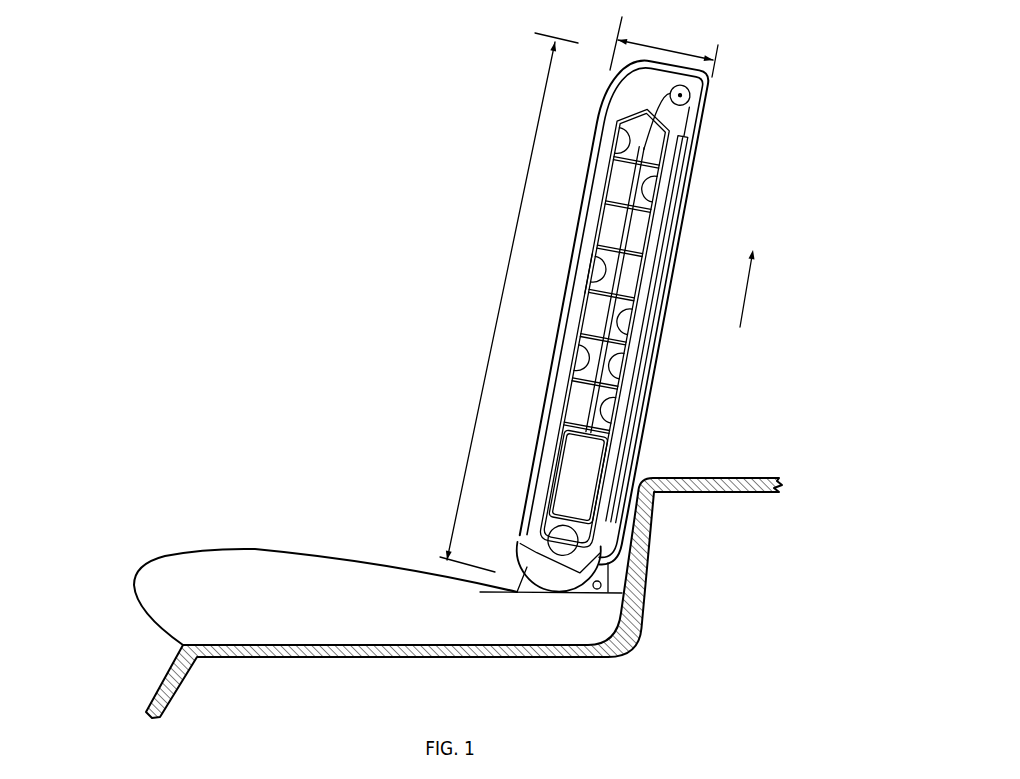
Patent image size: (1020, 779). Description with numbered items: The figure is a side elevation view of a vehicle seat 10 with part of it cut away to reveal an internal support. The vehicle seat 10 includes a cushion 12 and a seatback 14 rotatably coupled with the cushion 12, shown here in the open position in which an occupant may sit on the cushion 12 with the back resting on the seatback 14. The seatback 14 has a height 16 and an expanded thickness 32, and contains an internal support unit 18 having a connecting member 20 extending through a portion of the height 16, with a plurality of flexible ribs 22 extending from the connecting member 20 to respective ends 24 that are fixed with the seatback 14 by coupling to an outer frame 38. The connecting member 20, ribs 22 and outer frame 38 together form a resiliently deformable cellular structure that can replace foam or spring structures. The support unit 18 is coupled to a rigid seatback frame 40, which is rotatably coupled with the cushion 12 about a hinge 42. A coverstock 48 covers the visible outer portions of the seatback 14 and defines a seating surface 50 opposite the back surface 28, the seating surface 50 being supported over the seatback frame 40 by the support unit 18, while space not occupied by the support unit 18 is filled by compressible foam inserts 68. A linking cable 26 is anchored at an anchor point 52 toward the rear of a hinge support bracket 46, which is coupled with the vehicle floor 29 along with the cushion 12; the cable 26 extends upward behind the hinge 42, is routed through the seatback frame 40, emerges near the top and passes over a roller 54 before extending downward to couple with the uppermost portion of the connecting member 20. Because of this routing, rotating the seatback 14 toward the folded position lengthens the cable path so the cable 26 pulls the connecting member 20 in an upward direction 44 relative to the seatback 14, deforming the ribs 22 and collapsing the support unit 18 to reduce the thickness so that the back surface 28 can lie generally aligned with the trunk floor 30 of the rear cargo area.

The vehicle seat 10 is at (322, 208).
The cushion 12 is at (131, 624).
The seatback 14 is at (717, 128).
The height 16 is at (508, 266).
The internal support unit 18 is at (592, 222).
The connecting member 20 is at (630, 222).
The flexible ribs 22 is at (604, 187).
The ends 24 is at (622, 150).
The linking cable 26 is at (663, 100).
The back surface 28 is at (648, 434).
The floor 29 is at (546, 657).
The trunk floor 30 is at (737, 478).
The expanded thickness 32 is at (660, 45).
The outer frame 38 is at (630, 118).
The seatback frame 40 is at (625, 458).
The hinge 42 is at (555, 545).
The upward direction 44 is at (747, 292).
The hinge support bracket 46 is at (590, 590).
The coverstock 48 is at (532, 488).
The seating surface 50 is at (534, 457).
The anchor point 52 is at (603, 593).
The roller 54 is at (686, 93).
The foam inserts 68 is at (585, 488).